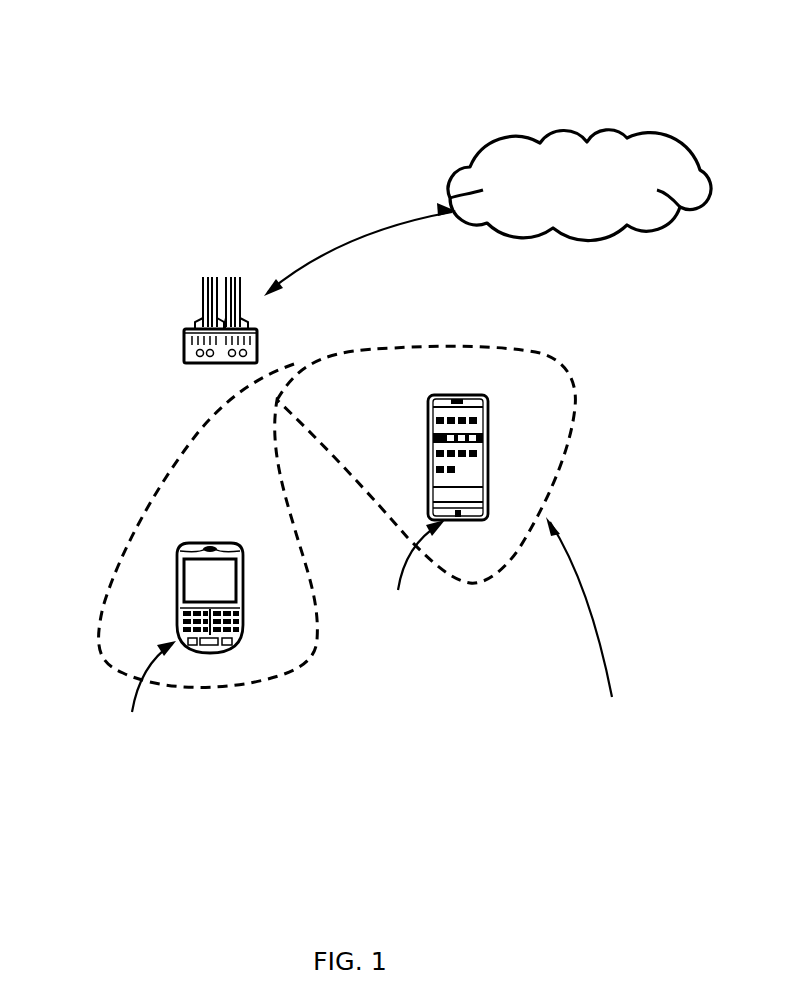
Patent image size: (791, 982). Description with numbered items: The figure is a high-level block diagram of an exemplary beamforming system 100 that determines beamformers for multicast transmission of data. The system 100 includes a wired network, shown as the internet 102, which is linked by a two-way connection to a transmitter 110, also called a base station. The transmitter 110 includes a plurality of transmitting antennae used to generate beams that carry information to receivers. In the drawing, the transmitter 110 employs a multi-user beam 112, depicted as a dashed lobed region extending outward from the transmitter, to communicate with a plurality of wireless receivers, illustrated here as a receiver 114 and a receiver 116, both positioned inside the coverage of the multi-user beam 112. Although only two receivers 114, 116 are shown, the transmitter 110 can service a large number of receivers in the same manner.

The beamforming system 100 is at (690, 35).
The internet 102 is at (467, 166).
The transmitter 110 is at (193, 196).
The multi-user beam 112 is at (567, 437).
The receiver 114 is at (221, 541).
The receiver 116 is at (428, 402).